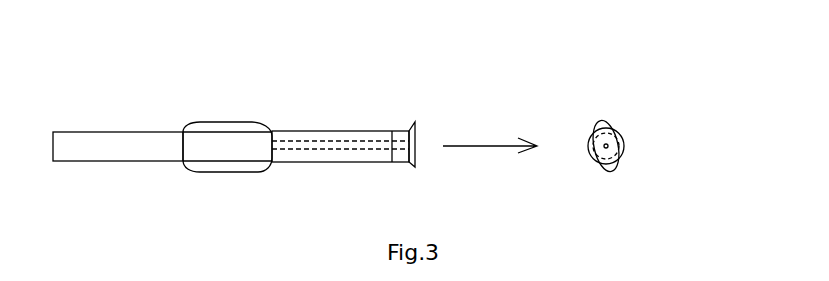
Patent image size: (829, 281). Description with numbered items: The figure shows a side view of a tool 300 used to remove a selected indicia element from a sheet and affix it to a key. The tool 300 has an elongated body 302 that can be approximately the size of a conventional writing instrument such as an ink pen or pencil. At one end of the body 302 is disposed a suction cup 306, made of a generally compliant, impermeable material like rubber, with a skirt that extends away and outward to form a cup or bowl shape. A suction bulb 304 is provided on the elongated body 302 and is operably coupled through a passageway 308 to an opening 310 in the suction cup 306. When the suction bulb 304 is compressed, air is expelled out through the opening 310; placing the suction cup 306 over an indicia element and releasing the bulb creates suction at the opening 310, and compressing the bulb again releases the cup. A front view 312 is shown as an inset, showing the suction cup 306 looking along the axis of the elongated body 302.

The tool 300 is at (145, 42).
The elongated body 302 is at (92, 132).
The suction bulb 304 is at (237, 122).
The suction cup 306 is at (413, 130).
The passageway 308 is at (313, 140).
The opening 310 is at (608, 145).
The front view 312 is at (627, 42).